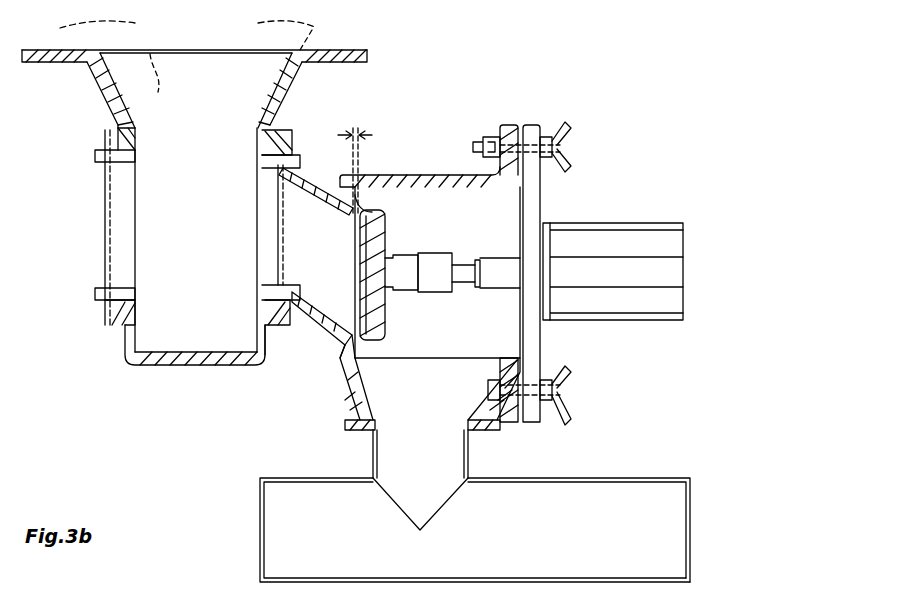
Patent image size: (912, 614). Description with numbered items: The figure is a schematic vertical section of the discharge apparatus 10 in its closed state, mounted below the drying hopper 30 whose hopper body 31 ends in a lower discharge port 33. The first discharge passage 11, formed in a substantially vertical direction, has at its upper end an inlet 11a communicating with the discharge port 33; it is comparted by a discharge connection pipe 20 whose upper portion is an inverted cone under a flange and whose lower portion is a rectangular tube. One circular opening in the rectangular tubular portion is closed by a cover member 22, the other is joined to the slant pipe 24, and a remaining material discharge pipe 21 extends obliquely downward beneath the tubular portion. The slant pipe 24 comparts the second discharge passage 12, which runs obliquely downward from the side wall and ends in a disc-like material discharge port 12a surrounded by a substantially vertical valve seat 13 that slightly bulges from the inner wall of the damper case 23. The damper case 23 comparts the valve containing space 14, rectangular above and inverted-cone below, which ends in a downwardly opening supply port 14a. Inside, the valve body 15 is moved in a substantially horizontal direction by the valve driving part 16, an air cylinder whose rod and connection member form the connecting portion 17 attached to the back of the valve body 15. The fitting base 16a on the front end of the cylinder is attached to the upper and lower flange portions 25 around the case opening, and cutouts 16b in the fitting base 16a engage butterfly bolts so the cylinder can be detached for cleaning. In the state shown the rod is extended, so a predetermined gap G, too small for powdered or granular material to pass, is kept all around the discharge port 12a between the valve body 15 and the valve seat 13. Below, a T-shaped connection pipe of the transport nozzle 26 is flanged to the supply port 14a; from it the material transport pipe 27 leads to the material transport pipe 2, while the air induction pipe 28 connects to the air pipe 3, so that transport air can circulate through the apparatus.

The discharge apparatus 10 is at (701, 115).
The first discharge passage 11 is at (265, 112).
The inlet 11a is at (92, 50).
The second discharge passage 12 is at (315, 175).
The material discharge port 12a is at (382, 244).
The valve seat 13 is at (374, 212).
The valve containing space 14 is at (358, 374).
The supply port 14a is at (470, 444).
The valve body 15 is at (386, 318).
The valve driving part 16 is at (634, 212).
The fitting base 16a is at (545, 184).
The cutouts 16b is at (562, 147).
The connecting portion 17 is at (491, 259).
The discharge connection pipe 20 is at (103, 92).
The remaining material discharge pipe 21 is at (170, 365).
The cover member 22 is at (103, 222).
The damper case 23 is at (460, 175).
The slant pipe 24 is at (314, 308).
The flange portions 25 is at (508, 125).
The transport nozzle 26 is at (343, 448).
The material transport pipe 27 is at (282, 478).
The air induction pipe 28 is at (628, 478).
The drying hopper 30 is at (322, 33).
The hopper body 31 is at (255, 35).
The discharge port 33 is at (159, 85).
The material transport pipe 2 is at (240, 533).
The air pipe 3 is at (707, 528).
The predetermined gap G is at (355, 163).